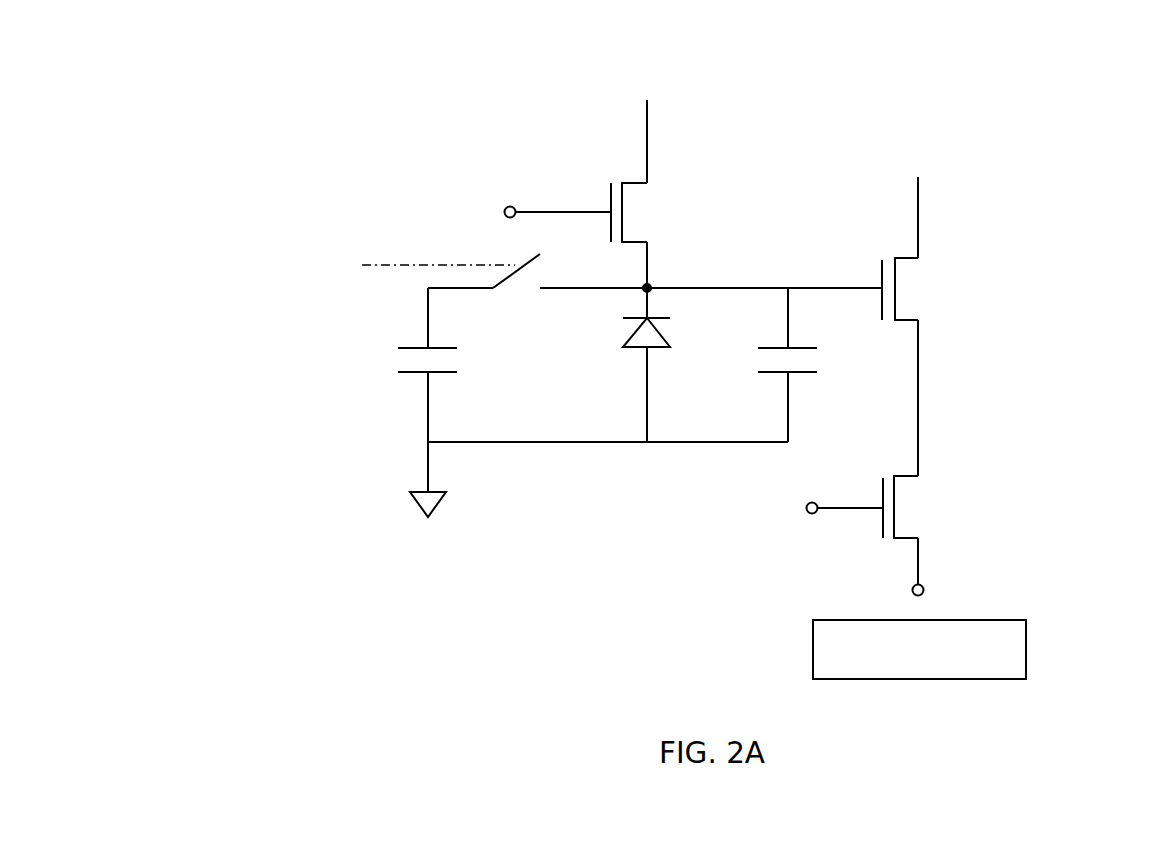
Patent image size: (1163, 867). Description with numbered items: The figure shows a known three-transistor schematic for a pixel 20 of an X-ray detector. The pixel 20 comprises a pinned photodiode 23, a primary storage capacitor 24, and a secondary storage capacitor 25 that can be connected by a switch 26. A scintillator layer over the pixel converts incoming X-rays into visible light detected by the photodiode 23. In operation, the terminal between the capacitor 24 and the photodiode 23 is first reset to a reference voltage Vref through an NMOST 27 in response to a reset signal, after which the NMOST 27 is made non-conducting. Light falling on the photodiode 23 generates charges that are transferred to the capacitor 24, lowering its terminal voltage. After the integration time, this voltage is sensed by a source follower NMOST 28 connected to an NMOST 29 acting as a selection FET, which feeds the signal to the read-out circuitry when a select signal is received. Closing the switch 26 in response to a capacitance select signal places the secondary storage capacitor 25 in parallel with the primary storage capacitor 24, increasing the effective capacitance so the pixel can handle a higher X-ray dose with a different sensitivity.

The pixel 20 is at (1052, 171).
The photodiode 23 is at (640, 362).
The primary storage capacitor 24 is at (818, 362).
The secondary storage capacitor 25 is at (385, 364).
The switch 26 is at (507, 283).
The NMOST 27 is at (633, 215).
The source follower NMOST 28 is at (905, 288).
The selection FET 29 is at (903, 508).